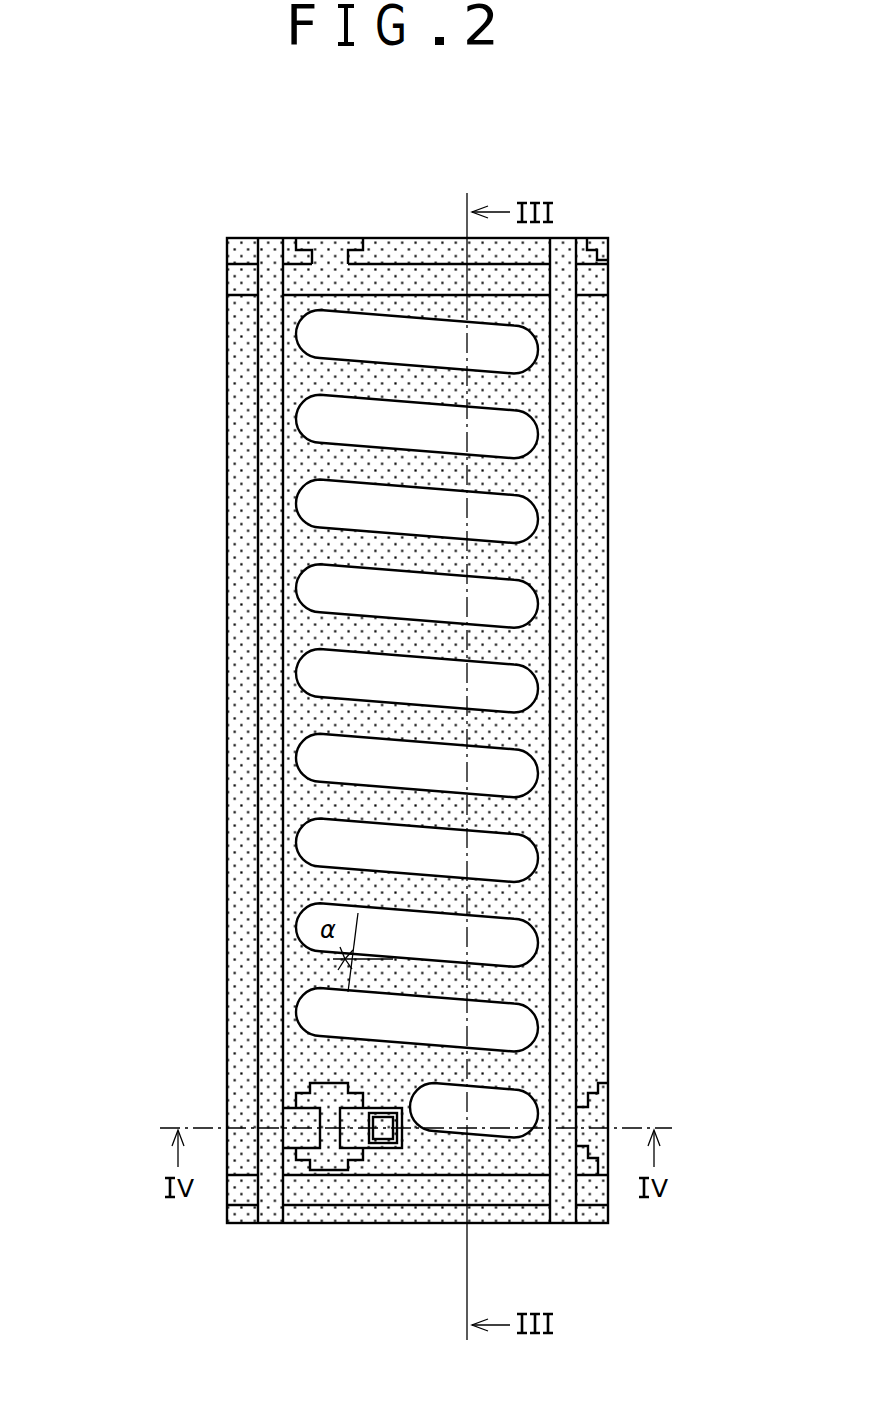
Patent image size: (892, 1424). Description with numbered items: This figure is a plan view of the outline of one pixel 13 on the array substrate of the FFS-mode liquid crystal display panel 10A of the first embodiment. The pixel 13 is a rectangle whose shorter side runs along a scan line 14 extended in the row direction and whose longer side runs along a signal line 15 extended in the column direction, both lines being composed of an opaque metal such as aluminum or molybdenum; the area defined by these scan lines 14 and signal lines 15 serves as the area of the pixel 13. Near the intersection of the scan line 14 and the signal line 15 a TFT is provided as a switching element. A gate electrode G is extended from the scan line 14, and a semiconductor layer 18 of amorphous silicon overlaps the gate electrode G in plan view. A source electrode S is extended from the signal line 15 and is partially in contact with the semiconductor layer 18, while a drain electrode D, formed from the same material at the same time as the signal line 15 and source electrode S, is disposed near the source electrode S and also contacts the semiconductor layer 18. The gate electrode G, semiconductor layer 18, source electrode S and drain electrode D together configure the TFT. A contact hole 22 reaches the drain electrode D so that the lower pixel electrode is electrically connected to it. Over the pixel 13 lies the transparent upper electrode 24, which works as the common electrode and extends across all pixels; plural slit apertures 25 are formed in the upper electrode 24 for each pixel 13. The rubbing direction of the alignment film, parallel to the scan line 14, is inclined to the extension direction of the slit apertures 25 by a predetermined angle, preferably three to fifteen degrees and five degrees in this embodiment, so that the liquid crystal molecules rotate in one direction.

The liquid crystal display panel 10A is at (154, 159).
The pixel 13 is at (550, 185).
The scan line 14 is at (503, 1193).
The signal line 15 is at (270, 923).
The semiconductor layer 18 is at (330, 1140).
The contact hole 22 is at (384, 1132).
The upper electrode 24 is at (308, 800).
The slit apertures 25 is at (322, 678).
The source electrode S is at (312, 1137).
The gate electrode G is at (338, 1170).
The drain electrode D is at (353, 1135).
The thin film transistor TFT is at (400, 1316).